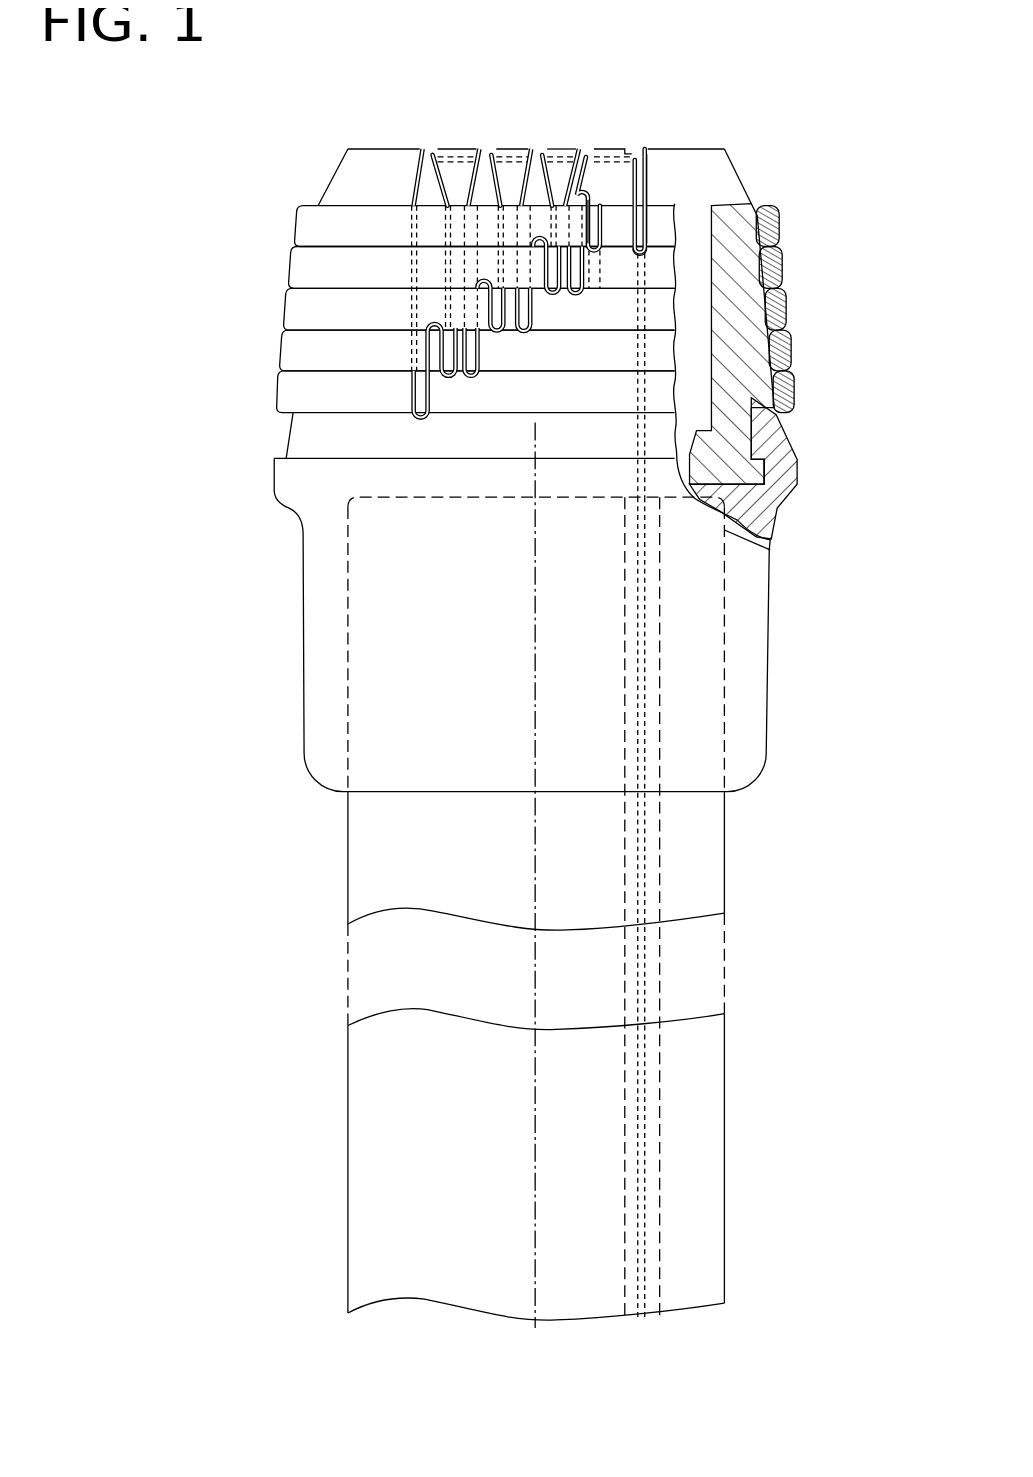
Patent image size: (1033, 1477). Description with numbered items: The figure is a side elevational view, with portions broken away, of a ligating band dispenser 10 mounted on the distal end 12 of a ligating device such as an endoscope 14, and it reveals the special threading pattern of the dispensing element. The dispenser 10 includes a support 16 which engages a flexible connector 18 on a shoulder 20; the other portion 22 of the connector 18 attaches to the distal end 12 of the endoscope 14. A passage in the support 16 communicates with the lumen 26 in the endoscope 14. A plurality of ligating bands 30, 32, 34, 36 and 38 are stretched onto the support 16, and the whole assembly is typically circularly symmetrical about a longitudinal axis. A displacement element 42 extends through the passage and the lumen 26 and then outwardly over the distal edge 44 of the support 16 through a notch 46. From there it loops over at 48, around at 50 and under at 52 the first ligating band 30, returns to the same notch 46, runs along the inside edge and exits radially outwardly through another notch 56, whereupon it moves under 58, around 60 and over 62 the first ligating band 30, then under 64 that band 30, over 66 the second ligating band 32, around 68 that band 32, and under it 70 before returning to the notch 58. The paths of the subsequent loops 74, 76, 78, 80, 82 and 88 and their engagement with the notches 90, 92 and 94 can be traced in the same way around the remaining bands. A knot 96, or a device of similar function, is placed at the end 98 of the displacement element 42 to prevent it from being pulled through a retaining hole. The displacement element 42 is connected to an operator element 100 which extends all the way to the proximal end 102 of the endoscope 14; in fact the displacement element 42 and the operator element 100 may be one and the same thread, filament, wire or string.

The ligating band dispenser 10 is at (782, 860).
The distal end 12 is at (770, 546).
The endoscope 14 is at (725, 1188).
The support 16 is at (756, 202).
The flexible connector 18 is at (799, 477).
The shoulder 20 is at (758, 457).
The other portion 22 is at (755, 791).
The lumen 26 is at (625, 878).
The first ligating band 30 is at (780, 223).
The second ligating band 32 is at (783, 265).
The ligating band 34 is at (788, 305).
The ligating band 36 is at (792, 347).
The ligating band 38 is at (797, 390).
The displacement element 42 is at (642, 552).
The distal edge 44 is at (725, 146).
The notch 46 is at (642, 147).
The loop over 48 is at (648, 233).
The loop around 50 is at (640, 251).
The loop under 52 is at (636, 246).
The notch 56 is at (587, 146).
The under pass 58 is at (590, 152).
The around pass 60 is at (592, 272).
The over pass 62 is at (590, 212).
The under pass 64 is at (618, 150).
The over pass 66 is at (567, 292).
The around pass 68 is at (580, 288).
The under pass 70 is at (570, 178).
The subsequent loop 74 is at (561, 292).
The subsequent loop 76 is at (517, 330).
The subsequent loop 78 is at (483, 330).
The subsequent loop 80 is at (477, 373).
The subsequent loop 82 is at (445, 375).
The subsequent loop 88 is at (427, 408).
The notch 90 is at (537, 146).
The notch 92 is at (485, 146).
The notch 94 is at (433, 146).
The knot 96 is at (417, 146).
The end 98 is at (417, 167).
The operator element 100 is at (638, 640).
The proximal end 102 is at (692, 1303).